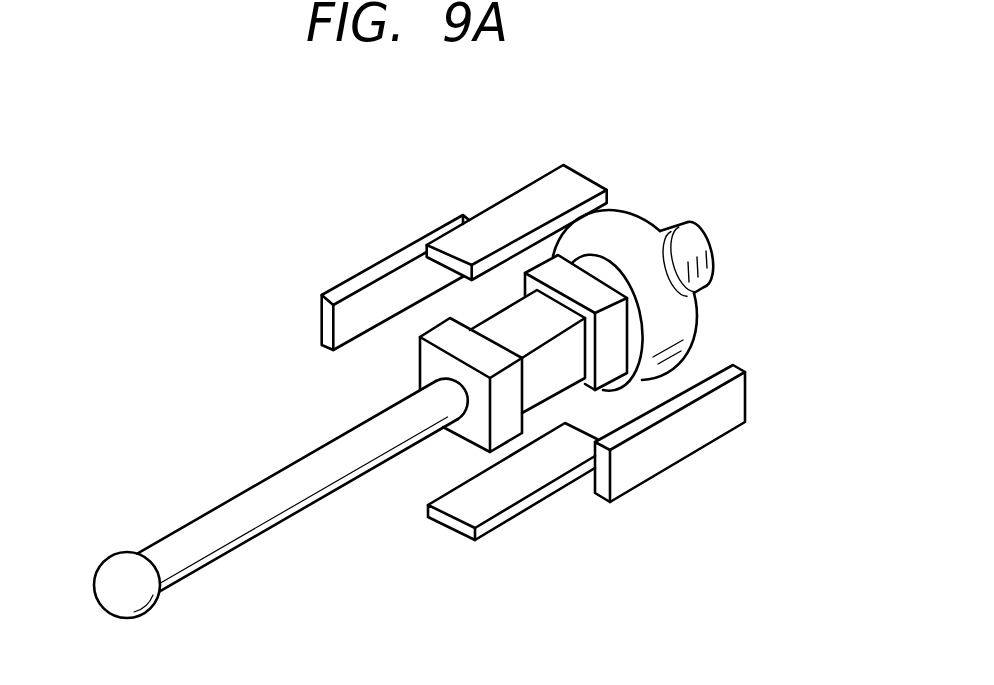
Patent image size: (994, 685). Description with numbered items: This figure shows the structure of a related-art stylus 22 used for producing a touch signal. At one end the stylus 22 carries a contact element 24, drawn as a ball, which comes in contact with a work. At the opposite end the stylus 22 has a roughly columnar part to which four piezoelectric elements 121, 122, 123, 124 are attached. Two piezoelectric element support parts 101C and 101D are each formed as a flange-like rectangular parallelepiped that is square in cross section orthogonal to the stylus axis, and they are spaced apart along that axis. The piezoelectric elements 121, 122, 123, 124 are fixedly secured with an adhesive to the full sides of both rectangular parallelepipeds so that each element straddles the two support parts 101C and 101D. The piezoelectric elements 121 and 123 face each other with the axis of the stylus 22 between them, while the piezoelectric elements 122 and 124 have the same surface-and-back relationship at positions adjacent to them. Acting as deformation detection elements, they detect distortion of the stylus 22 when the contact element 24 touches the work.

The stylus 22 is at (258, 519).
The contact element 24 is at (124, 561).
The piezoelectric element support part 101C is at (425, 357).
The piezoelectric element support part 101D is at (585, 286).
The piezoelectric element 121 is at (514, 195).
The piezoelectric element 122 is at (736, 397).
The piezoelectric element 123 is at (543, 494).
The piezoelectric element 124 is at (354, 276).